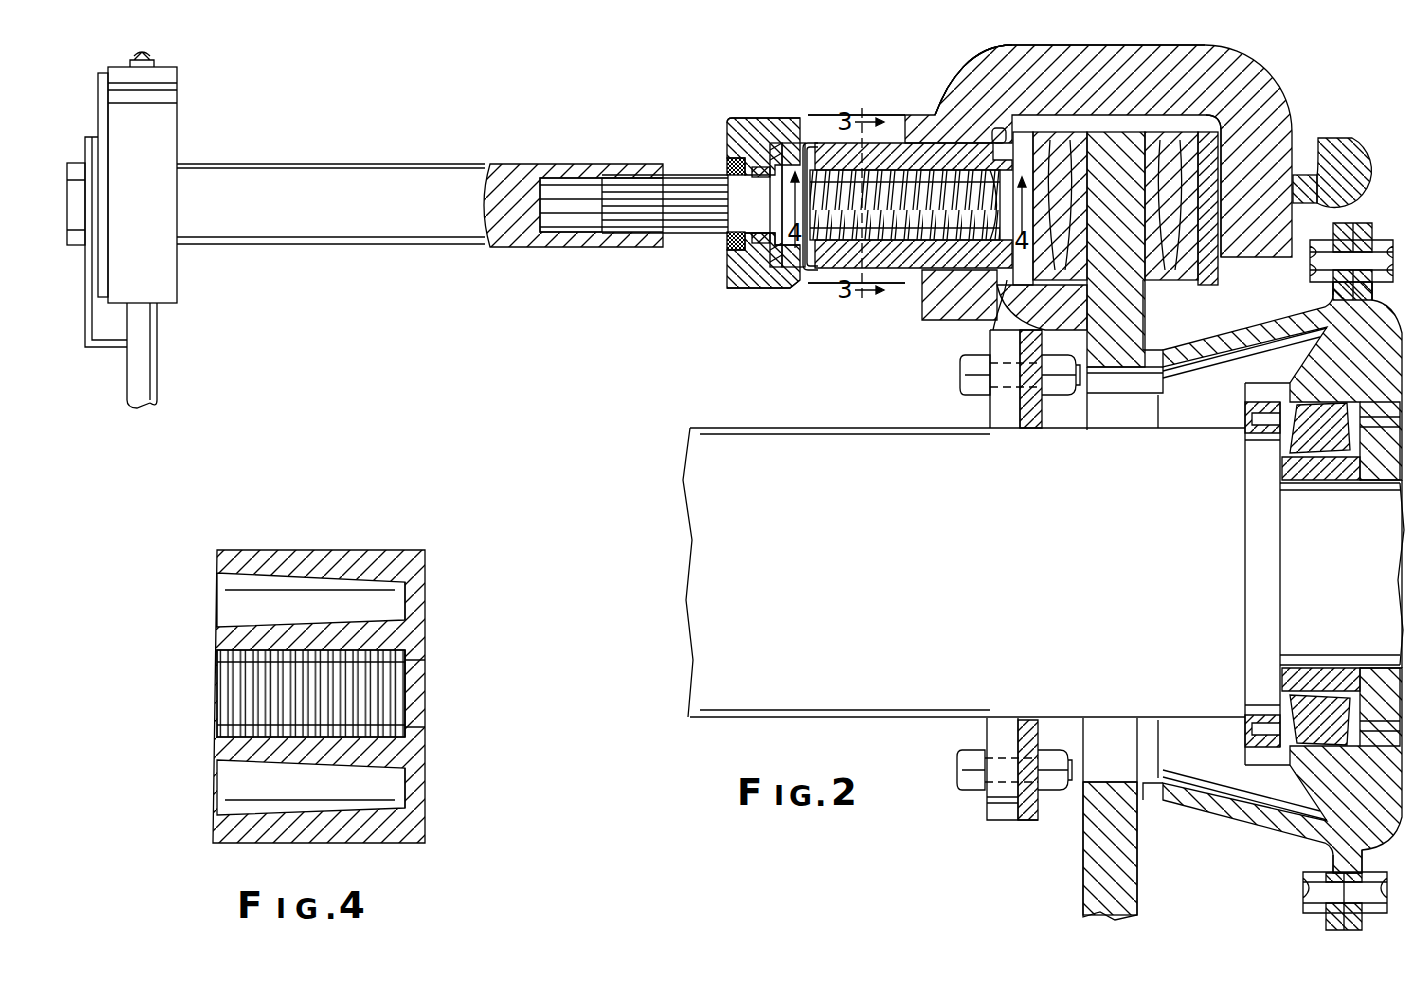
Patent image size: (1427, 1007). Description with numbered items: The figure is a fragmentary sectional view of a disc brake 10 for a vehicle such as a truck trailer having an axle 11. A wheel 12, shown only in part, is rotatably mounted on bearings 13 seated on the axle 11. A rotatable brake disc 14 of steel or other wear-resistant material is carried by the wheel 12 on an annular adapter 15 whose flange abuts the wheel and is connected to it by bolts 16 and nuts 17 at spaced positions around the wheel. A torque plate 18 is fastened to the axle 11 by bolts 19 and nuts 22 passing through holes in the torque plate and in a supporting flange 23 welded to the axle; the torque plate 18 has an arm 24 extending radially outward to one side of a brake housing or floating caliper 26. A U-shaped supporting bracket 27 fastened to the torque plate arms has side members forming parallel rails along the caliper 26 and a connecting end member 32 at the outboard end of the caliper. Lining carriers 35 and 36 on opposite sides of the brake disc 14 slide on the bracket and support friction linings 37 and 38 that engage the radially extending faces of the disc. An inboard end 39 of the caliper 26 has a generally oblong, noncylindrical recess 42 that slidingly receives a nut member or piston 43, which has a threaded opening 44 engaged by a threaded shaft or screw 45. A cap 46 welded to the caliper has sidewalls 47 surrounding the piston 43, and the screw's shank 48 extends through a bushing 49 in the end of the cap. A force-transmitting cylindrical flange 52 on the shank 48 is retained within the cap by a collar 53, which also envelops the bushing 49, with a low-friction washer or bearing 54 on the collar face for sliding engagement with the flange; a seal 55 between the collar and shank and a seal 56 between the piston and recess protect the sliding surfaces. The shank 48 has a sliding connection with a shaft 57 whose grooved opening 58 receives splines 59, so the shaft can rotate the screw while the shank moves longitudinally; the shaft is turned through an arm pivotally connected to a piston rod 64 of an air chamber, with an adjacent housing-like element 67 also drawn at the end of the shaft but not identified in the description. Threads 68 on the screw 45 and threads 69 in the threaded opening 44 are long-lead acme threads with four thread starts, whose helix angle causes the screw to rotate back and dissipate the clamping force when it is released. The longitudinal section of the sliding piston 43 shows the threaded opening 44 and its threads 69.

In FIG. 2, the disc brake 10 is at (1298, 89).
In FIG. 2, the axle 11 is at (700, 547).
In FIG. 2, the wheel 12 is at (1373, 333).
In FIG. 2, the bearings 13 is at (1337, 445).
In FIG. 2, the brake disc 14 is at (1117, 140).
In FIG. 2, the annular adapter 15 is at (1253, 817).
In FIG. 2, the bolts 16 is at (1322, 283).
In FIG. 2, the nuts 17 is at (1380, 248).
In FIG. 2, the torque plate 18 is at (1010, 333).
In FIG. 2, the bolts 19 is at (975, 385).
In FIG. 2, the nuts 22 is at (1055, 393).
In FIG. 2, the supporting flange 23 is at (992, 797).
In FIG. 2, the arm 24 is at (1047, 303).
In FIG. 2, the brake housing or floating caliper 26 is at (975, 110).
In FIG. 2, the U-shaped supporting bracket 27 is at (1358, 152).
In FIG. 2, the connecting end member 32 is at (1340, 195).
In FIG. 2, the lining carrier 35 is at (1022, 132).
In FIG. 2, the lining carrier 36 is at (1212, 147).
In FIG. 2, the friction lining 37 is at (1062, 138).
In FIG. 2, the friction lining 38 is at (1175, 138).
In FIG. 2, the inboard end 39 is at (970, 68).
In FIG. 2, the recess 42 is at (965, 80).
In FIG. 2, the nut member or piston 43 is at (810, 148).
In FIG. 4, the nut member or piston 43 is at (393, 560).
In FIG. 2, the threaded opening 44 is at (897, 240).
In FIG. 4, the threaded opening 44 is at (228, 670).
In FIG. 2, the threaded shaft or screw 45 is at (835, 245).
In FIG. 2, the cap 46 is at (727, 143).
In FIG. 2, the sidewalls 47 is at (817, 280).
In FIG. 2, the shank 48 is at (737, 230).
In FIG. 2, the bushing 49 is at (763, 177).
In FIG. 2, the force-transmitting cylindrical flange 52 is at (727, 283).
In FIG. 2, the collar 53 is at (727, 123).
In FIG. 2, the washer or bearing 54 is at (740, 258).
In FIG. 2, the seal 55 is at (730, 167).
In FIG. 2, the seal 56 is at (998, 128).
In FIG. 2, the shaft 57 is at (350, 173).
In FIG. 2, the grooved opening 58 is at (567, 188).
In FIG. 2, the splines 59 is at (638, 227).
In FIG. 2, the piston rod 64 is at (143, 367).
In FIG. 2, the actuator housing 67 is at (163, 137).
In FIG. 2, the threads 68 is at (820, 160).
In FIG. 2, the threads 69 is at (908, 165).
In FIG. 4, the threads 69 is at (232, 713).